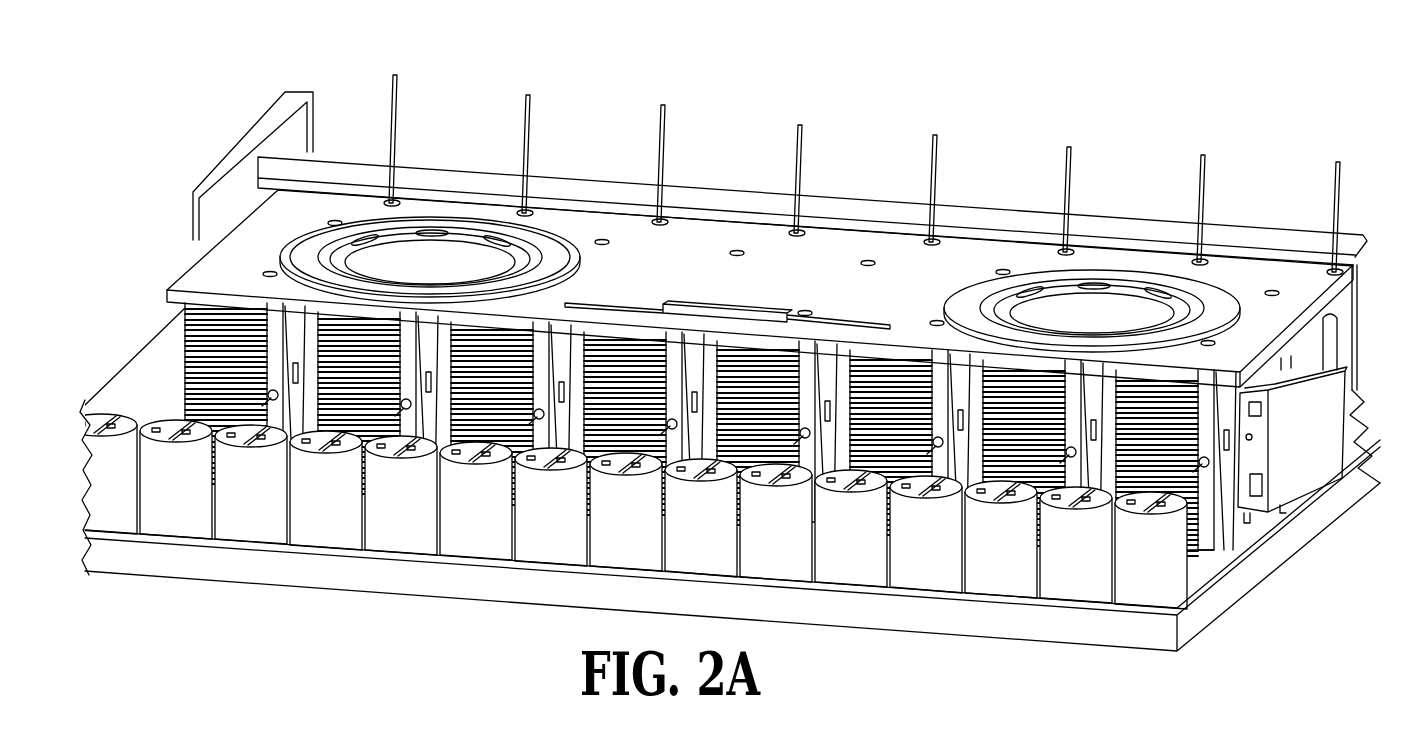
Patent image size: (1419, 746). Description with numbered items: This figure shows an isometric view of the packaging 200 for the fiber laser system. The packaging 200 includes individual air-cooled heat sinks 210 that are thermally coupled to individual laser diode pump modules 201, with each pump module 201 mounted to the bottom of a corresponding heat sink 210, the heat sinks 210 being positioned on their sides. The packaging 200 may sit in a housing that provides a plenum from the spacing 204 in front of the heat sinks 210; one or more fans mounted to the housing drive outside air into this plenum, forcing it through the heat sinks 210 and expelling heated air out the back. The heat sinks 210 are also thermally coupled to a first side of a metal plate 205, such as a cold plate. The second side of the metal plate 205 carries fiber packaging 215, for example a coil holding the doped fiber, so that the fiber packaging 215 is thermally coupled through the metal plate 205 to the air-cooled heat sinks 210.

The packaging 200 is at (857, 91).
The laser diode pump module 201 is at (300, 355).
The spacing 204 is at (214, 385).
The metal plate 205 is at (172, 287).
The air-cooled heat sink 210 is at (1232, 533).
The fiber packaging 215 is at (440, 213).